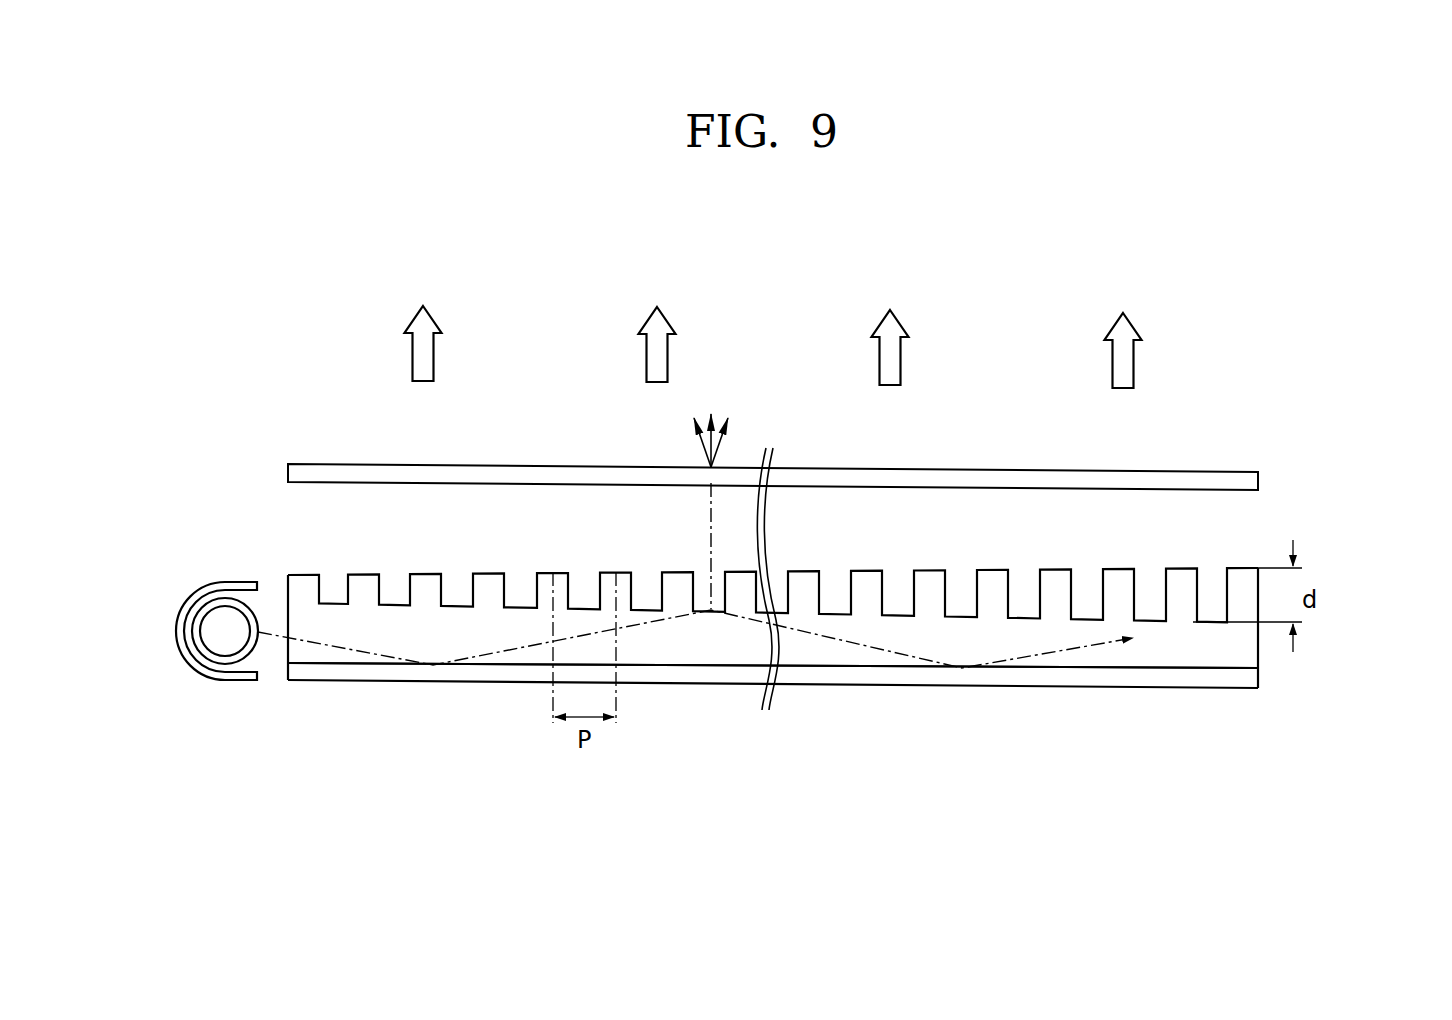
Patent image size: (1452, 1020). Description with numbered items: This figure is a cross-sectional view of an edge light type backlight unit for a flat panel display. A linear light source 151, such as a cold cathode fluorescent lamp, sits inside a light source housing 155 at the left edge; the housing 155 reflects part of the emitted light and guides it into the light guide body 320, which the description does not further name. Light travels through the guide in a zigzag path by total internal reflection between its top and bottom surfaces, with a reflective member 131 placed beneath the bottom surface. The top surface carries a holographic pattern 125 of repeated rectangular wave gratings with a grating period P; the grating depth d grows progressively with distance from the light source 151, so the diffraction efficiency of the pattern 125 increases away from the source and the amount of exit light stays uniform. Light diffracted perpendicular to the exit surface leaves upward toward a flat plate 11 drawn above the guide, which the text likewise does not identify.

The optical sheet 11 is at (1258, 479).
The holographic pattern 125 is at (1196, 545).
The reflective member 131 is at (953, 678).
The light source 151 is at (223, 664).
The light source housing 155 is at (188, 662).
The light guide plate 320 is at (1210, 645).